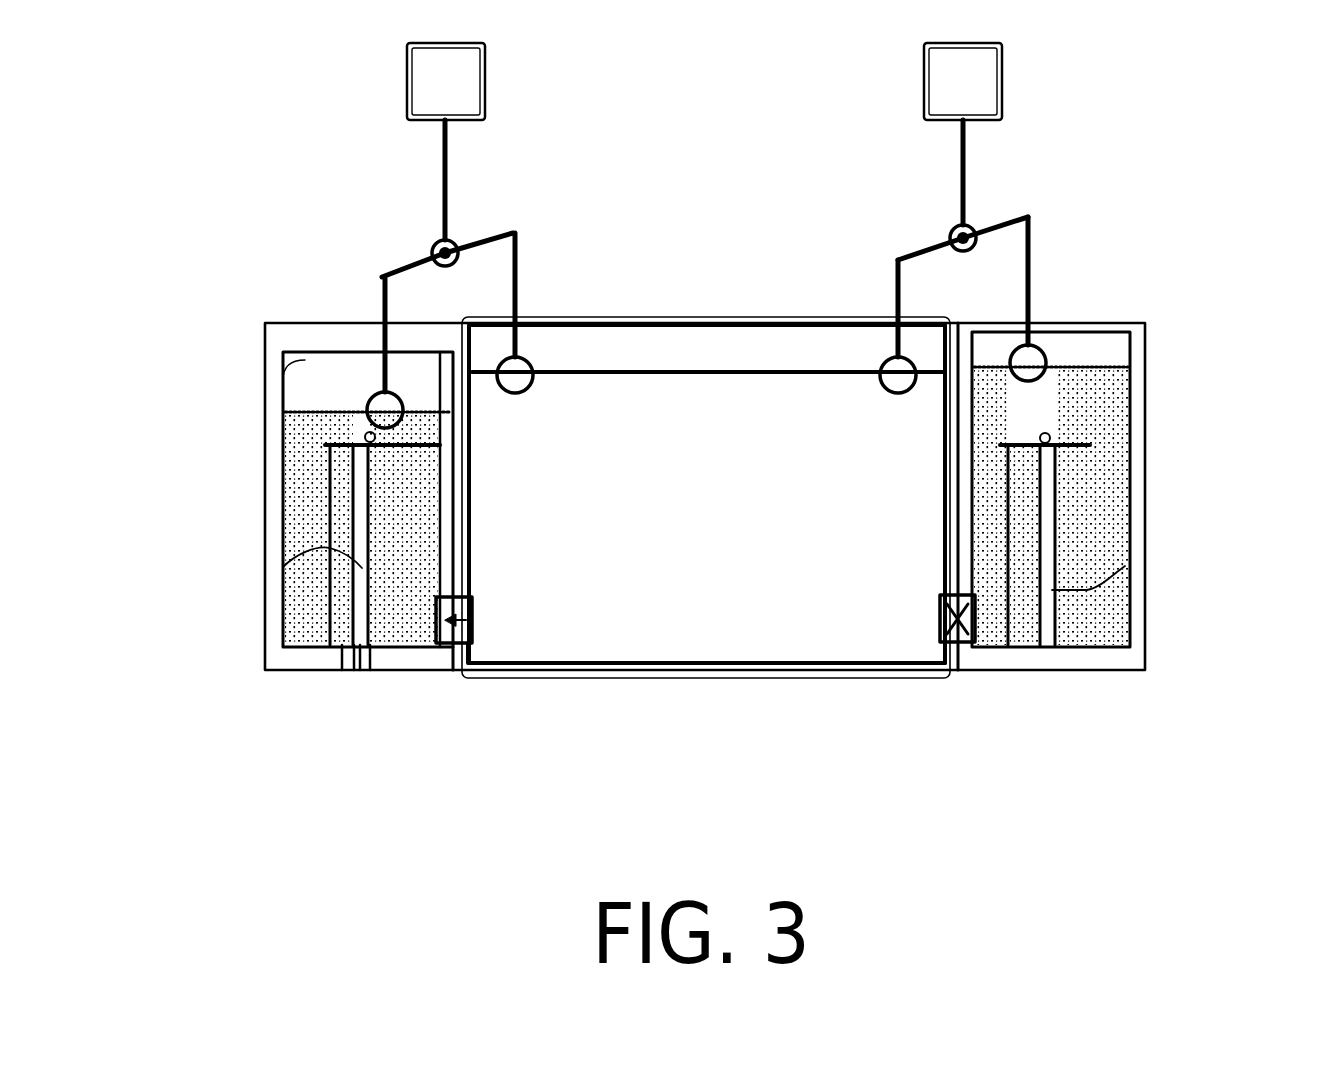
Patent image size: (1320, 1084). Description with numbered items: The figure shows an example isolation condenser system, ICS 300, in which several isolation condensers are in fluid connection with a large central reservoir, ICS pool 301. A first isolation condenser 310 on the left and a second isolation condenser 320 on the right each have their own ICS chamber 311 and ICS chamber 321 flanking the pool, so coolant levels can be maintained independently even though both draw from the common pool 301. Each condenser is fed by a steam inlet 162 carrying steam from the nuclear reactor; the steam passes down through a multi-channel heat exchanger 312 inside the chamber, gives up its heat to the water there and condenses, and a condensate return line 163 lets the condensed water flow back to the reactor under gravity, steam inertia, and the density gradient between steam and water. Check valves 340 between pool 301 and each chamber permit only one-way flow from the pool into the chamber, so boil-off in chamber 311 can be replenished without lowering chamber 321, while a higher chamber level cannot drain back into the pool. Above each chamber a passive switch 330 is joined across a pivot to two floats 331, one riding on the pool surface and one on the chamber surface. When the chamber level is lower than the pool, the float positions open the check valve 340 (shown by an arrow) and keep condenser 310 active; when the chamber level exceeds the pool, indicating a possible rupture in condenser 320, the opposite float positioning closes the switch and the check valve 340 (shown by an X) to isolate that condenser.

The ICS 300 is at (1158, 771).
The ICS pool 301 is at (742, 605).
The first isolation condenser 310 is at (283, 567).
The ICS chamber 311 is at (287, 420).
The heat exchanger 312 is at (440, 436).
The second isolation condenser 320 is at (1125, 566).
The ICS chamber 321 is at (1125, 420).
The passive switch 330 is at (463, 90).
The float 331 is at (385, 410).
The check valve 340 is at (472, 632).
The steam inlet 162 is at (360, 655).
The condensate return line 163 is at (336, 658).